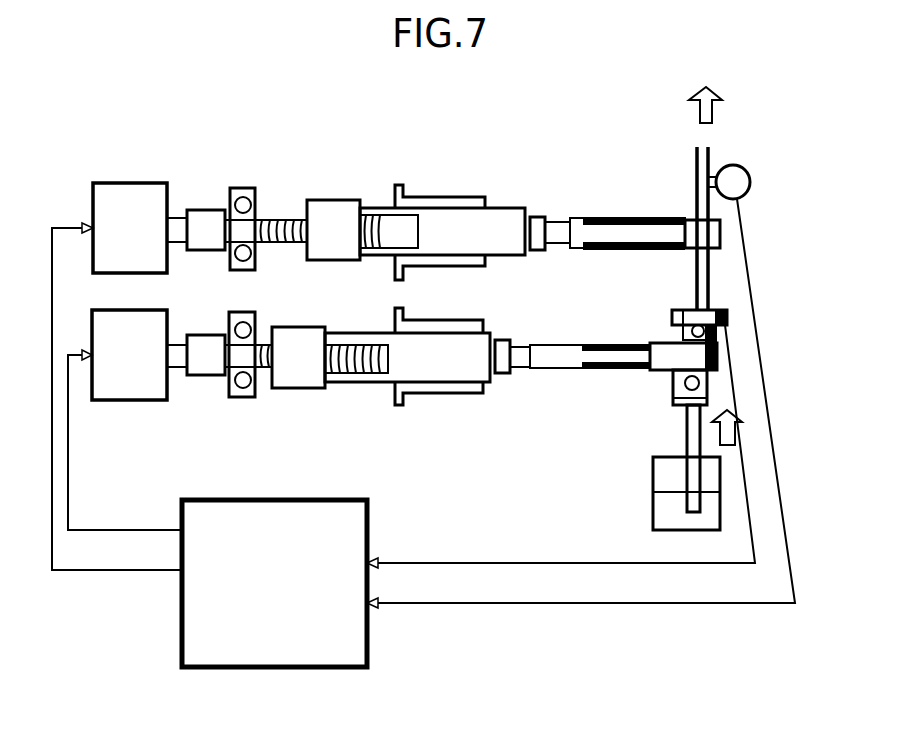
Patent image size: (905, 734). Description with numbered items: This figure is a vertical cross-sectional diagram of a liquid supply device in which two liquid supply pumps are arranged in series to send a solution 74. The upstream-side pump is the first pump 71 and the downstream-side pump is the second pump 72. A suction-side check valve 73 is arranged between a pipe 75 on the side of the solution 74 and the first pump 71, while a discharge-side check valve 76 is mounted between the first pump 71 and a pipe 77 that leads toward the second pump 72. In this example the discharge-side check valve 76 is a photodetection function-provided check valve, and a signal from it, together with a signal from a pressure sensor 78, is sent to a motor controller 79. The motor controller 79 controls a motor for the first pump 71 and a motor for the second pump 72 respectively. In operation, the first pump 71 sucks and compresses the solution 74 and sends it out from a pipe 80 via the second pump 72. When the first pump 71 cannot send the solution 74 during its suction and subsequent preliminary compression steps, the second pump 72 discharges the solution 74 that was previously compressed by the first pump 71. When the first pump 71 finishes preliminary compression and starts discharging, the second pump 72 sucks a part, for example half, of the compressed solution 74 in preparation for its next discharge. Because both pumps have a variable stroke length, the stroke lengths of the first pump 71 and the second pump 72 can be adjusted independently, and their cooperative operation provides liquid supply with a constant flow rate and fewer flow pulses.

The first pump 71 is at (422, 393).
The second pump 72 is at (422, 197).
The suction-side check valve 73 is at (707, 383).
The solution 74 is at (653, 508).
The pipe 75 is at (687, 436).
The discharge-side check valve 76 is at (727, 316).
The pipe 77 is at (712, 272).
The pressure sensor 78 is at (752, 180).
The motor controller 79 is at (182, 615).
The pipe 80 is at (697, 158).